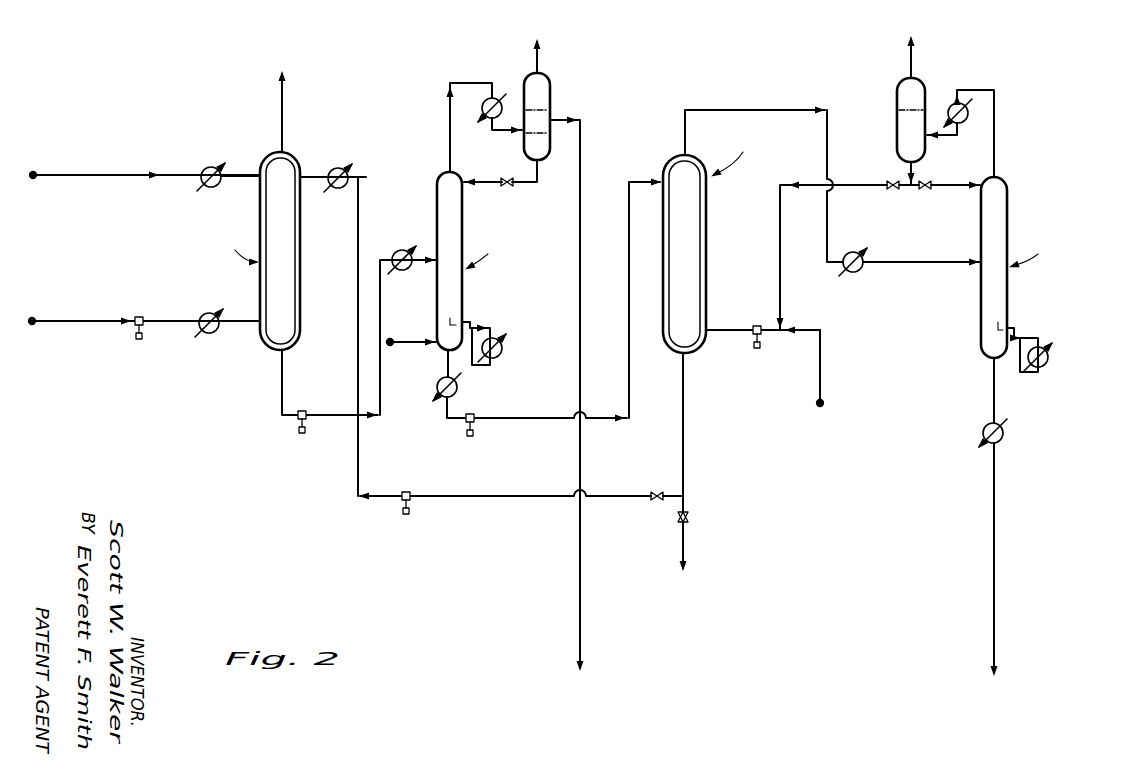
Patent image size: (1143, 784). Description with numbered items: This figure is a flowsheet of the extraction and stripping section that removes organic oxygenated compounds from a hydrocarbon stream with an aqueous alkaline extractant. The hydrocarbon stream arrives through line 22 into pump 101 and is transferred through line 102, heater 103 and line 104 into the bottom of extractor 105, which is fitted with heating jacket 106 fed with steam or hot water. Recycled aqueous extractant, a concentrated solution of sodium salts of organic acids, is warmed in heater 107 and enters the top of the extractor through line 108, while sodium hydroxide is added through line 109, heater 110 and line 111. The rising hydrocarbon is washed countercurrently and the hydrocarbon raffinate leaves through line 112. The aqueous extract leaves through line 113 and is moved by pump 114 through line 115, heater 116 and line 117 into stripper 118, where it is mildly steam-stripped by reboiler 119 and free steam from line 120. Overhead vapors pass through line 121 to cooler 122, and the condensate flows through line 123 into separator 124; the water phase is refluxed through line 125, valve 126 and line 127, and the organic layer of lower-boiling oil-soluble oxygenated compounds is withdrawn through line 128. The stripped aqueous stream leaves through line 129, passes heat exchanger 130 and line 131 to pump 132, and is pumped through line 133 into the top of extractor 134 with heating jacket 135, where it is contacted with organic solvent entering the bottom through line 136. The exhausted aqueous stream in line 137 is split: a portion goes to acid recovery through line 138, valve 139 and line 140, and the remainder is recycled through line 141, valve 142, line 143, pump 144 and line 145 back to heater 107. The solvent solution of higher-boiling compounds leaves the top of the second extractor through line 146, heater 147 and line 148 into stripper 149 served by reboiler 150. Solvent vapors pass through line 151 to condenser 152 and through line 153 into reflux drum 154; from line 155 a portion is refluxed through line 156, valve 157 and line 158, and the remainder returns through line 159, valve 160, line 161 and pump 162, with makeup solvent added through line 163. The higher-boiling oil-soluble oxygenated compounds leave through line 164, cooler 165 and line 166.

The line 22 is at (71, 324).
The pump 101 is at (140, 342).
The line 102 is at (171, 321).
The heater 103 is at (210, 336).
The line 104 is at (247, 324).
The extractor 105 is at (270, 218).
The heating jacket 106 is at (263, 284).
The heater 107 is at (367, 175).
The line 108 is at (327, 170).
The line 109 is at (89, 177).
The heater 110 is at (207, 167).
The line 111 is at (239, 178).
The line 112 is at (283, 113).
The line 113 is at (278, 404).
The pump 114 is at (298, 436).
The line 115 is at (381, 392).
The heater 116 is at (397, 251).
The line 117 is at (416, 263).
The stripper 118 is at (446, 212).
The reboiler 119 is at (500, 357).
The line 120 is at (414, 345).
The line 121 is at (446, 131).
The cooler 122 is at (483, 104).
The line 123 is at (500, 132).
The separator 124 is at (549, 80).
The line 125 is at (538, 184).
The valve 126 is at (509, 188).
The line 127 is at (485, 185).
The line 128 is at (581, 305).
The line 129 is at (446, 372).
The heat exchanger 130 is at (458, 392).
The line 131 is at (455, 421).
The pump 132 is at (470, 438).
The line 133 is at (565, 420).
The extractor 134 is at (672, 236).
The heating jacket 135 is at (667, 283).
The line 136 is at (727, 329).
The line 137 is at (685, 403).
The line 138 is at (685, 501).
The valve 139 is at (689, 518).
The line 140 is at (685, 552).
The line 141 is at (668, 494).
The valve 142 is at (655, 501).
The line 143 is at (536, 498).
The pump 144 is at (407, 516).
The line 145 is at (337, 336).
The line 146 is at (762, 110).
The heater 147 is at (855, 273).
The line 148 is at (950, 264).
The stripper 149 is at (1008, 206).
The reboiler 150 is at (1045, 366).
The line 151 is at (997, 140).
The condenser 152 is at (966, 117).
The line 153 is at (950, 136).
The reflux drum 154 is at (897, 96).
The line 155 is at (902, 168).
The line 156 is at (913, 190).
The valve 157 is at (927, 190).
The line 158 is at (958, 184).
The line 159 is at (898, 194).
The valve 160 is at (892, 190).
The line 161 is at (781, 227).
The pump 162 is at (757, 350).
The line 163 is at (822, 345).
The line 164 is at (990, 395).
The cooler 165 is at (1005, 443).
The line 166 is at (995, 594).